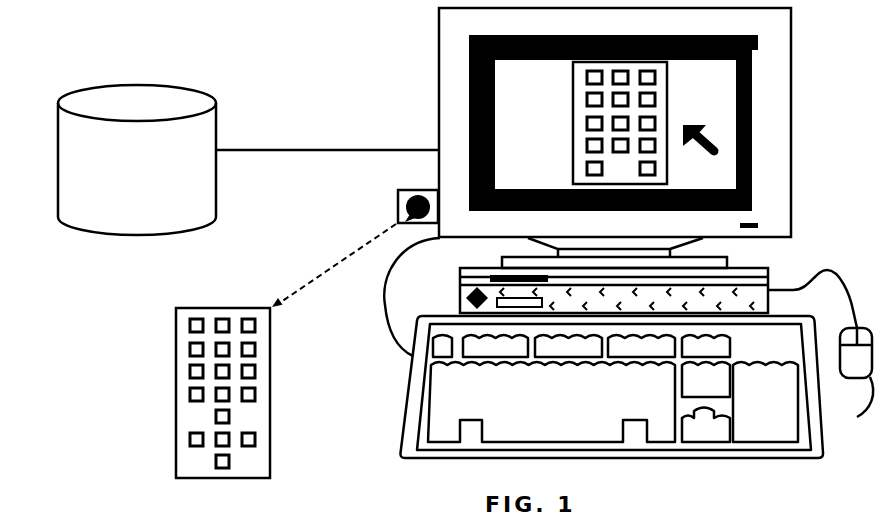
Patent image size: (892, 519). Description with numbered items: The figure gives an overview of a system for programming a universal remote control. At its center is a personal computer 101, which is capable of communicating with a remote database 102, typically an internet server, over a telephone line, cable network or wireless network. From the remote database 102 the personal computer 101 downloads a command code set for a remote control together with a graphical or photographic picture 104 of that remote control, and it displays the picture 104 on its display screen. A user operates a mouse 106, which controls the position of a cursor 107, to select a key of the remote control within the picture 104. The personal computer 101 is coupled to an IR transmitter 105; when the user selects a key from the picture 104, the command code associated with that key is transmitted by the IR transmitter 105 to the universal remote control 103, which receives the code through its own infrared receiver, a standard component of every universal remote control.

The personal computer 101 is at (794, 128).
The remote database 102 is at (217, 137).
The universal remote control 103 is at (175, 387).
The picture of the remote control 104 is at (572, 127).
The IR transmitter 105 is at (397, 205).
The mouse 106 is at (820, 352).
The cursor 107 is at (703, 152).